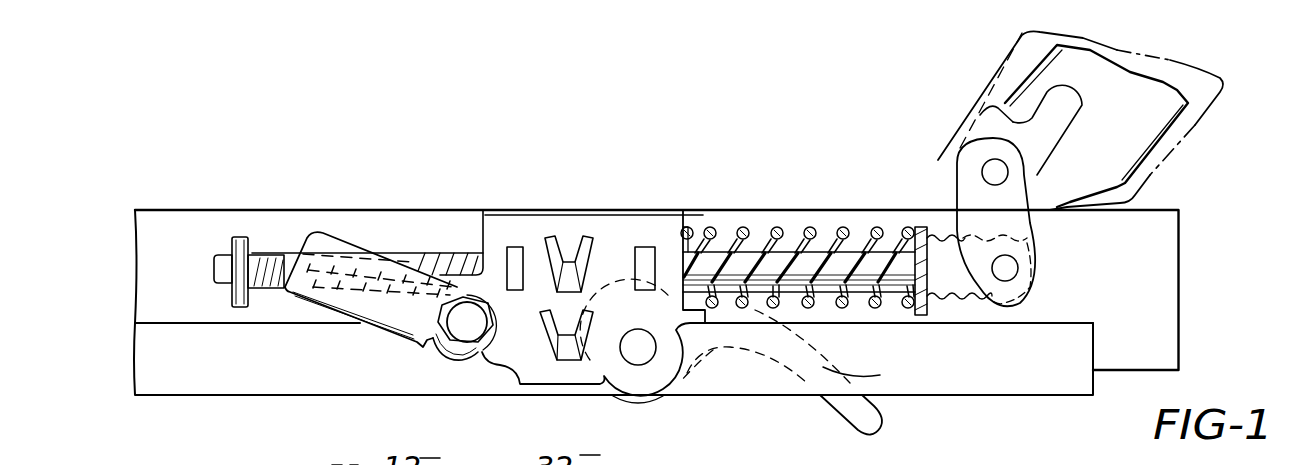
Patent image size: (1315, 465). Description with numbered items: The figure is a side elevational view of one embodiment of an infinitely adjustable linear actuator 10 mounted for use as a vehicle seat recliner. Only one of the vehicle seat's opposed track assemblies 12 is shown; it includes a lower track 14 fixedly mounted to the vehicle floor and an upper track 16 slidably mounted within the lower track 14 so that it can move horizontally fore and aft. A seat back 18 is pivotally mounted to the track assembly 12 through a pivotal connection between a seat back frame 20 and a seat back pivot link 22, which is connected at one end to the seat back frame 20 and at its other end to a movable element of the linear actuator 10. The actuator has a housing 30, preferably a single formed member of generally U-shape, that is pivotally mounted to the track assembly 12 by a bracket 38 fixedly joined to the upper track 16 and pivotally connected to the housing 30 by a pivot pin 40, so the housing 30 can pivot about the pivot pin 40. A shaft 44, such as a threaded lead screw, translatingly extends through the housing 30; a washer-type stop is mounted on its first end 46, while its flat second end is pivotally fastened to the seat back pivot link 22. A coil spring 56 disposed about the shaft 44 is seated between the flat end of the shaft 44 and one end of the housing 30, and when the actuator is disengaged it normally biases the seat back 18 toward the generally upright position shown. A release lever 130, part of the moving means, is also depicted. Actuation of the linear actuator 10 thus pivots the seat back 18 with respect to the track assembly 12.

The linear actuator 10 is at (544, 98).
The track assembly 12 is at (106, 254).
The lower track 14 is at (160, 356).
The upper track 16 is at (167, 233).
The seat back 18 is at (1013, 60).
The seat back frame 20 is at (990, 117).
The seat back pivot link 22 is at (963, 214).
The housing 30 is at (508, 215).
The bracket 38 is at (319, 236).
The pivot pin 40 is at (481, 360).
The shaft 44 is at (786, 240).
The first end 46 is at (274, 268).
The coil spring 56 is at (780, 240).
The release lever 130 is at (823, 367).